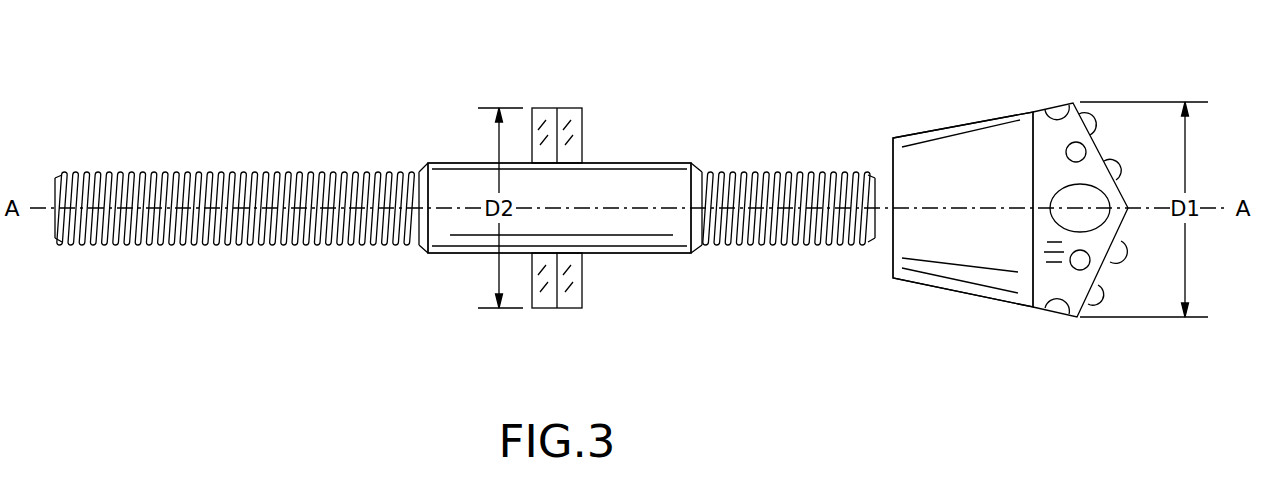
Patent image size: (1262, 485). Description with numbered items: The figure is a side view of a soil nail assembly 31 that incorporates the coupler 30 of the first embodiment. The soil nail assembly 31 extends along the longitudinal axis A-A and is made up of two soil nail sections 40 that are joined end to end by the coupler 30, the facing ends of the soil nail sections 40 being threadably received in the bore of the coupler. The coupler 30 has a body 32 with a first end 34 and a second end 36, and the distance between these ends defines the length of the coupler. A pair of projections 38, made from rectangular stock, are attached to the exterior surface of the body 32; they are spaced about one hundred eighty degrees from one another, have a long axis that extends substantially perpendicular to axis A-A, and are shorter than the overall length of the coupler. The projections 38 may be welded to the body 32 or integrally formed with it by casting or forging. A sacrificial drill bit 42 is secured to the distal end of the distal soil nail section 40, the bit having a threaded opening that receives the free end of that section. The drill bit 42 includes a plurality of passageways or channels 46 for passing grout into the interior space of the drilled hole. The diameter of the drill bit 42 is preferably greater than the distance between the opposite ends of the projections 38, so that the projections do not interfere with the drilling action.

The coupler 30 is at (688, 92).
The soil nail assembly 31 is at (763, 302).
The body 32 is at (460, 180).
The first end 34 is at (420, 168).
The second end 36 is at (694, 164).
The projections 38 is at (578, 118).
The soil nail sections 40 is at (245, 195).
The sacrificial drill bit 42 is at (1030, 90).
The passageways or channels 46 is at (1057, 108).